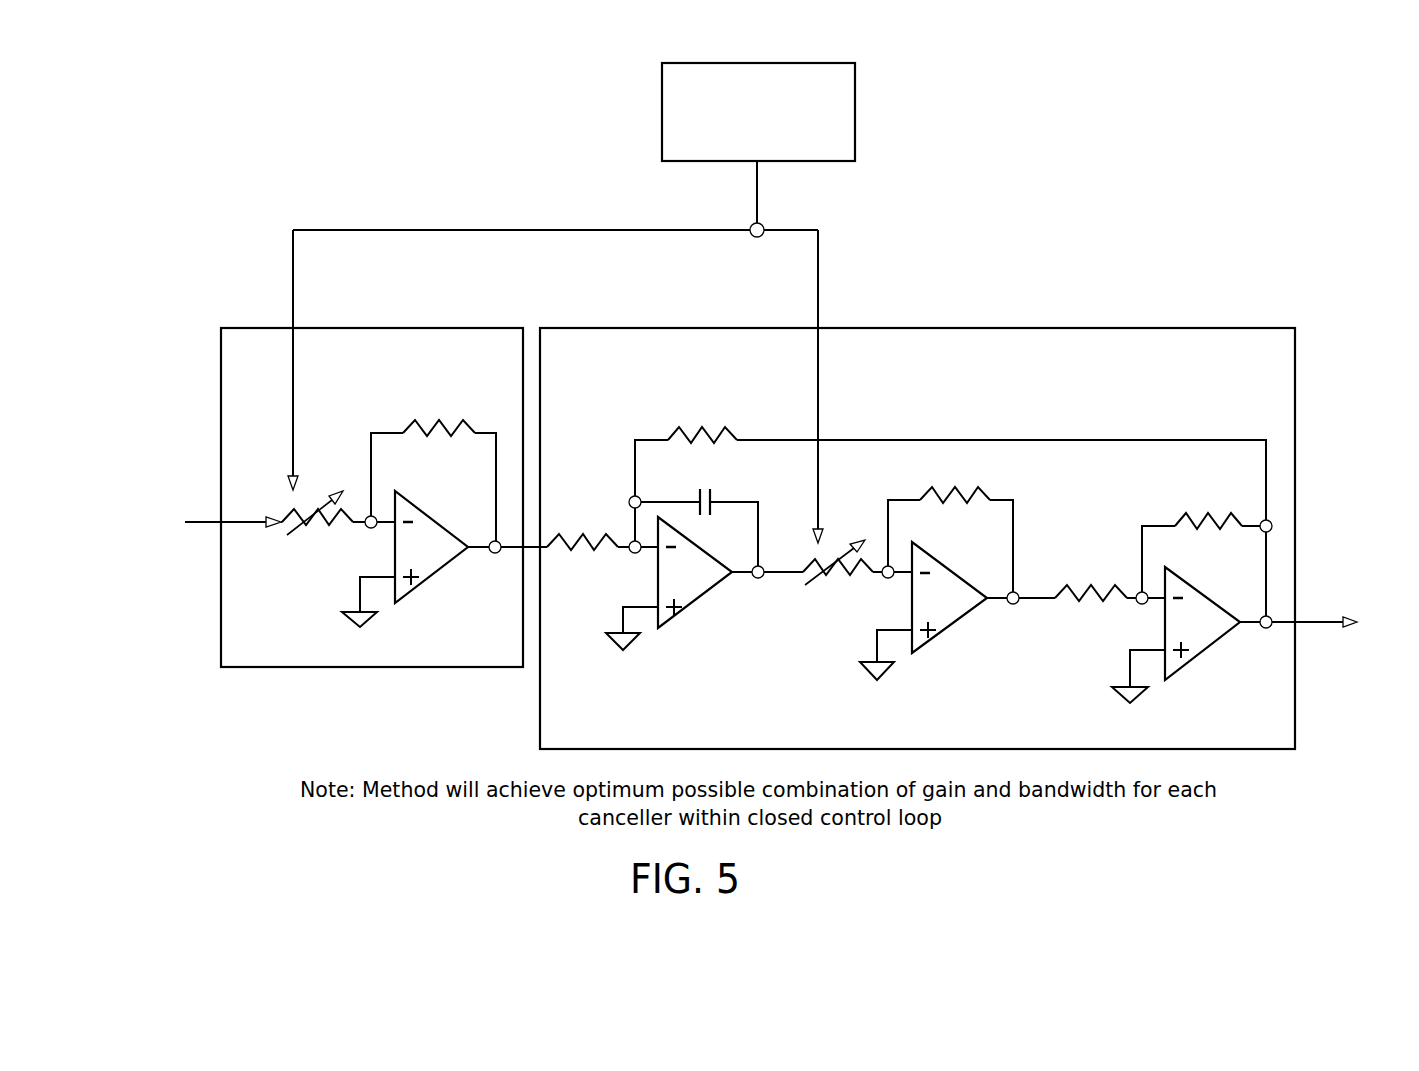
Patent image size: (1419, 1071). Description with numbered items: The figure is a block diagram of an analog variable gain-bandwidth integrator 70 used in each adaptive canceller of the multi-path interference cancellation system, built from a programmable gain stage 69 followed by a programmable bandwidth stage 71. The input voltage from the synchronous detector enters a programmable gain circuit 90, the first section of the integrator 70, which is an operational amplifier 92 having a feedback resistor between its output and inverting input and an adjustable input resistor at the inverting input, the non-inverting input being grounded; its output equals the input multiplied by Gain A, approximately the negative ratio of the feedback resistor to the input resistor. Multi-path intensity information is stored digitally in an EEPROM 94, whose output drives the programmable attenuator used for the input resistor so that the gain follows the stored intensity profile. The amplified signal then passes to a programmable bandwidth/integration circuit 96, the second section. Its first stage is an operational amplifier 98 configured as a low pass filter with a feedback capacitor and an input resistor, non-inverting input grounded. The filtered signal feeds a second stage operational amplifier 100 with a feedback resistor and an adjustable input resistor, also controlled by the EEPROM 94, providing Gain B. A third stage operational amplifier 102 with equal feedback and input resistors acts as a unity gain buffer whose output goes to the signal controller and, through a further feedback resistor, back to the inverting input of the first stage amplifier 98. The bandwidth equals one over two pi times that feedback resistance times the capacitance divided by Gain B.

The programmable gain stage 69 is at (197, 314).
The variable gain-bandwidth integrator 70 is at (331, 138).
The programmable bandwidth stage 71 is at (1341, 409).
The programmable gain circuit 90 is at (355, 328).
The operational amplifier 92 is at (452, 563).
The EEPROM 94 is at (856, 100).
The programmable bandwidth/integration circuit 96 is at (1208, 328).
The operational amplifier 98 is at (673, 622).
The operational amplifier 100 is at (948, 635).
The operational amplifier 102 is at (1208, 643).